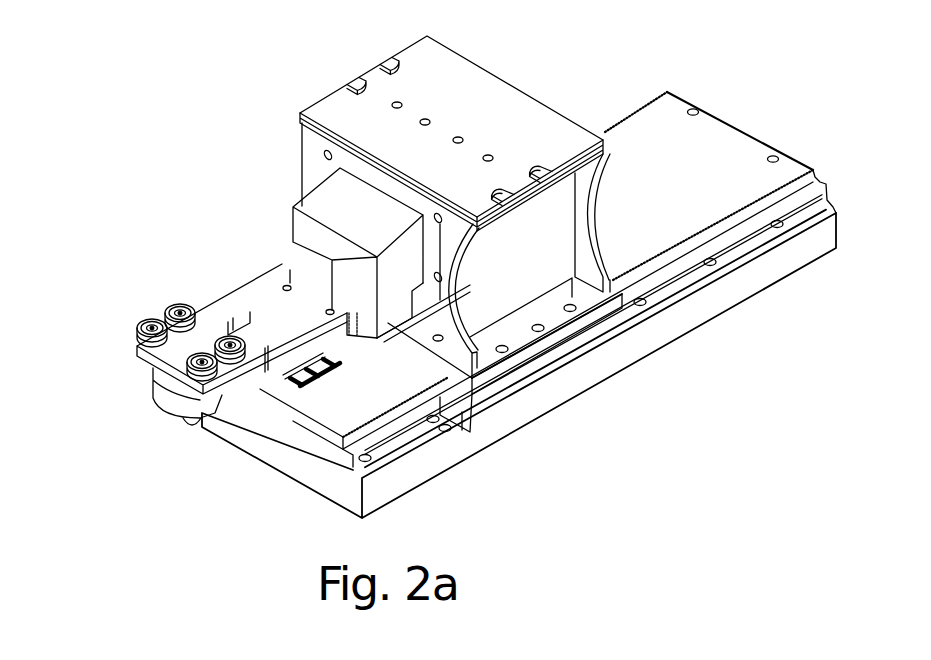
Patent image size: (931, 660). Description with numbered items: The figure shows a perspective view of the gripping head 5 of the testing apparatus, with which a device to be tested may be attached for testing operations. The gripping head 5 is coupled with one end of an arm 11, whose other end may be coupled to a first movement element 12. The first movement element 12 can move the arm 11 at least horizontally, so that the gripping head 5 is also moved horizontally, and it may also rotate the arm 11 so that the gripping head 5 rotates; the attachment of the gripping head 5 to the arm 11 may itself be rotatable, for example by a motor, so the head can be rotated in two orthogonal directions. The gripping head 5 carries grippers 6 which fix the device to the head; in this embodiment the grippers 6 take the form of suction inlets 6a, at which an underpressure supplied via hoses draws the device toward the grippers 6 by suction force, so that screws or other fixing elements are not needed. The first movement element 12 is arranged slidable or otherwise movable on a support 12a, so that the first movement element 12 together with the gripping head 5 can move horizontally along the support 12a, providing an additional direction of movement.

The gripping head 5 is at (117, 387).
The grippers 6 is at (137, 333).
The suction inlets 6a is at (140, 320).
The arm 11 is at (158, 412).
The first movement element 12 is at (530, 92).
The support 12a is at (790, 157).